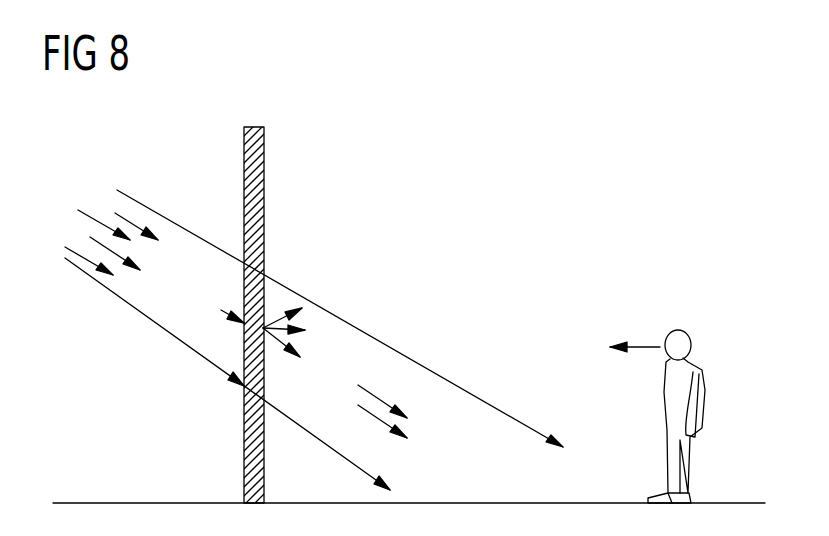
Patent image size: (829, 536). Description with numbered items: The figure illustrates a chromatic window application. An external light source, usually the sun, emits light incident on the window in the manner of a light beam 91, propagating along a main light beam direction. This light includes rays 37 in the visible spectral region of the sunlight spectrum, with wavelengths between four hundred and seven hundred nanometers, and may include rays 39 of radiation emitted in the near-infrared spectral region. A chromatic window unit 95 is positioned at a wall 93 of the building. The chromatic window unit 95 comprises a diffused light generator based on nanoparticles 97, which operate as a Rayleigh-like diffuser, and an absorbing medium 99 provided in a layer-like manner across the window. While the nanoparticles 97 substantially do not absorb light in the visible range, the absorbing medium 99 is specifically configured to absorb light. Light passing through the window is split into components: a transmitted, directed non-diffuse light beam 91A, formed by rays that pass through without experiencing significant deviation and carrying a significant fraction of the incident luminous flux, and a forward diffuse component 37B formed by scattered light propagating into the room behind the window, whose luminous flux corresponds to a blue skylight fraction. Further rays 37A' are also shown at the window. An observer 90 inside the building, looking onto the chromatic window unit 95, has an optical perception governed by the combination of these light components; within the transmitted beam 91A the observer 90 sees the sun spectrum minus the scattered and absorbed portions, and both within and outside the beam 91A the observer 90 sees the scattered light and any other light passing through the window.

The rays 37 is at (75, 243).
The rays 39 is at (117, 212).
The light beam 91 is at (170, 262).
The wall 93 is at (267, 165).
The chromatic window unit 95 is at (284, 285).
The nanoparticles 97 is at (222, 310).
The absorbing medium 99 is at (243, 390).
The forward diffuse component 37B is at (316, 319).
The radiation from other direction 37A' is at (395, 370).
The light beam 91A is at (442, 402).
The observer 90 is at (688, 315).